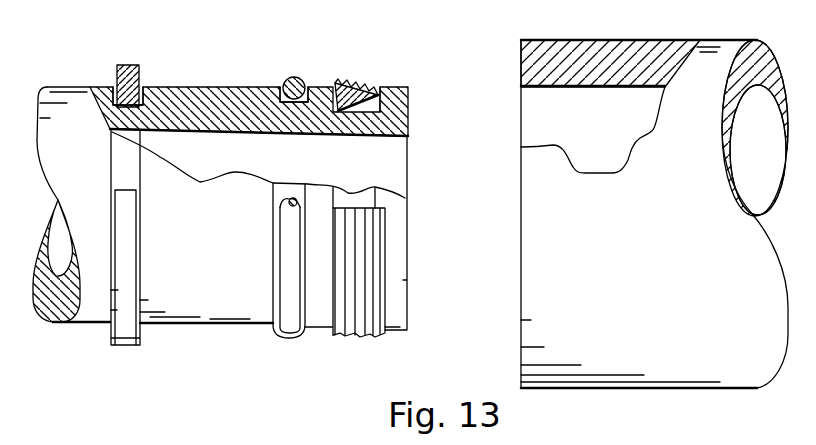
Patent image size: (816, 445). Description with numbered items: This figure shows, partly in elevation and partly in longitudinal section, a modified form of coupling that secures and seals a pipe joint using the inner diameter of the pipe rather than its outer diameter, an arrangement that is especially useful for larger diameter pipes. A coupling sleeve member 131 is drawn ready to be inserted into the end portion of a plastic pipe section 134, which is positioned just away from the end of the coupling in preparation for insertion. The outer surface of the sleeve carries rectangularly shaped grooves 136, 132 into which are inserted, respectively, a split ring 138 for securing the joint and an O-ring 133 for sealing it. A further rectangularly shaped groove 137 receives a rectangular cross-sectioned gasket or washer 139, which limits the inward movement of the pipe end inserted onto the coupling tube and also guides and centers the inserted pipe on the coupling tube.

The coupling sleeve member 131 is at (213, 87).
The rectangularly shaped groove 132 is at (308, 88).
The O-ring 133 is at (283, 79).
The pipe section 134 is at (718, 56).
The rectangularly shaped groove 136 is at (392, 90).
The rectangularly shaped groove 137 is at (148, 87).
The split ring 138 is at (347, 78).
The gasket or washer 139 is at (128, 65).